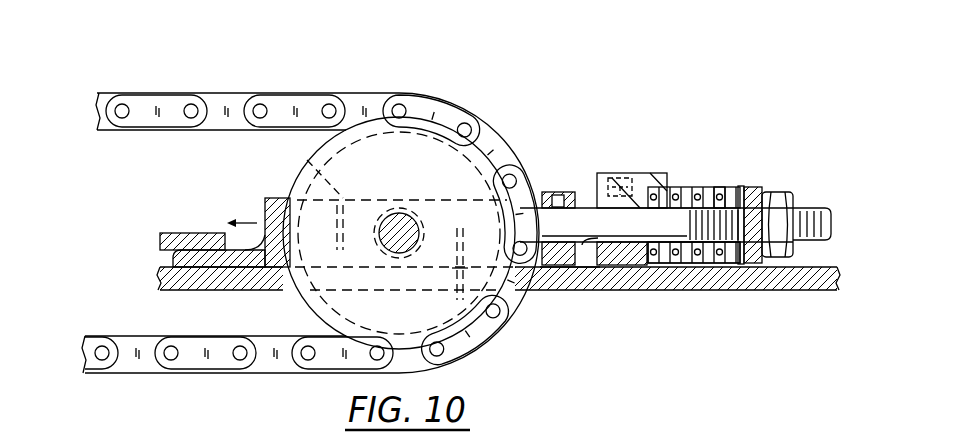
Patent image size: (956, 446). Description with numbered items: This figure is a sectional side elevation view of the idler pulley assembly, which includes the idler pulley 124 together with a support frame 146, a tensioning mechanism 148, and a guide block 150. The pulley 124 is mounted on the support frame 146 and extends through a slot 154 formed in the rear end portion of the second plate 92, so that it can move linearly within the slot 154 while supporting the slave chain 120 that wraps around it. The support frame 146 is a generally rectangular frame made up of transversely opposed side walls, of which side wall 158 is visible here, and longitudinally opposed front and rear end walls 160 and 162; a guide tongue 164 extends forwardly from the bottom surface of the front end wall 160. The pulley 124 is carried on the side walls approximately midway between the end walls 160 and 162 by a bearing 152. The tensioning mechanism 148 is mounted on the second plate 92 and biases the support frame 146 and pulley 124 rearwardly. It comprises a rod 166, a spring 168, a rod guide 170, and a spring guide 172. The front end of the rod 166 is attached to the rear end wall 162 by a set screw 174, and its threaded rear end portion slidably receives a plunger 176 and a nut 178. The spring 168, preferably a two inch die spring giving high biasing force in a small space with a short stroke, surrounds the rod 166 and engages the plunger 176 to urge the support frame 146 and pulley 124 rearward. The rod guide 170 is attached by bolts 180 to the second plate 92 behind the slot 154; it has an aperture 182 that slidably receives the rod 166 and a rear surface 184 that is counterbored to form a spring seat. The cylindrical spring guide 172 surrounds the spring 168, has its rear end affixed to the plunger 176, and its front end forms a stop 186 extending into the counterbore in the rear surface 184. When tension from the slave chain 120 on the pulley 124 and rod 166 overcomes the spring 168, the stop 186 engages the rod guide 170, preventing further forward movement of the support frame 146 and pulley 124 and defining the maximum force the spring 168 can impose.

The second plate 92 is at (820, 270).
The slave chain 120 is at (176, 51).
The idler pulley 124 is at (414, 174).
The support frame 146 is at (257, 205).
The tensioning mechanism 148 is at (752, 169).
The guide block 150 is at (175, 232).
The bearing 152 is at (400, 250).
The slot 154 is at (583, 267).
The side wall 158 is at (307, 160).
The front end wall 160 is at (268, 200).
The rear end wall 162 is at (567, 192).
The guide tongue 164 is at (177, 258).
The rod 166 is at (822, 209).
The spring 168 is at (716, 255).
The rod guide 170 is at (664, 188).
The spring guide 172 is at (716, 188).
The set screw 174 is at (555, 192).
The plunger 176 is at (762, 190).
The nut 178 is at (785, 195).
The bolts 180 is at (618, 178).
The aperture 182 is at (582, 245).
The rear surface 184 is at (658, 190).
The stop 186 is at (645, 255).